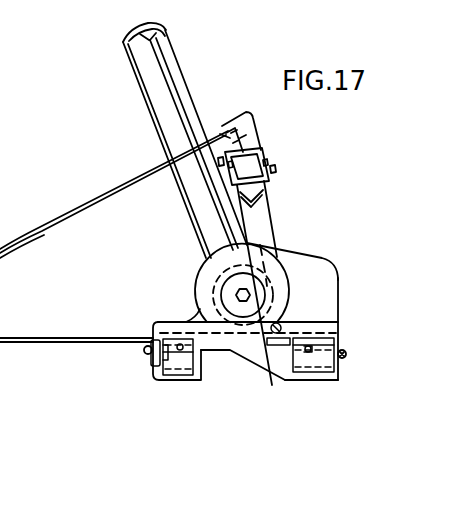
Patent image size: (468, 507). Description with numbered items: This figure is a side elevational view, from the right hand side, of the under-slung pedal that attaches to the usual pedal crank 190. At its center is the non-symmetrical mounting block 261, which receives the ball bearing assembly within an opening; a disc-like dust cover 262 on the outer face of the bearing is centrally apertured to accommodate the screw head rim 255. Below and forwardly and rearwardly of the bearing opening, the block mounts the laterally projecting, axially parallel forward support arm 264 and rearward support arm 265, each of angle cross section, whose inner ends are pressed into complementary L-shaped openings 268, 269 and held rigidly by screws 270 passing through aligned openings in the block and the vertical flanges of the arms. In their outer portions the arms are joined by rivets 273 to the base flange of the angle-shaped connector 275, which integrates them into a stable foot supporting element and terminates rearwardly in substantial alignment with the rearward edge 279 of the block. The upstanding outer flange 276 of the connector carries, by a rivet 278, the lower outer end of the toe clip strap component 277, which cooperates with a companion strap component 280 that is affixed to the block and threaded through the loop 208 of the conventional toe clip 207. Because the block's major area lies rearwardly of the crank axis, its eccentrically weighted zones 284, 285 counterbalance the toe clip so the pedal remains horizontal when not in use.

The pedal crank 190 is at (162, 78).
The toe clip 207 is at (70, 211).
The loop 208 is at (235, 119).
The strap component 280 is at (248, 139).
The zone 284 is at (291, 260).
The mounting block 261 is at (289, 262).
The toe clip strap component 277 is at (273, 283).
The screw head rim 255 is at (232, 283).
The dust cover 262 is at (216, 310).
The rearward edge 279 is at (339, 290).
The connector 275 is at (325, 317).
The outer flange 276 is at (180, 320).
The zone 285 is at (290, 376).
The opening 269 is at (333, 375).
The forward support arm 264 is at (176, 373).
The rearward support arm 265 is at (290, 375).
The rivets 273 is at (180, 349).
The rivet 278 is at (276, 336).
The opening 268 is at (158, 355).
The screws 270 is at (152, 352).